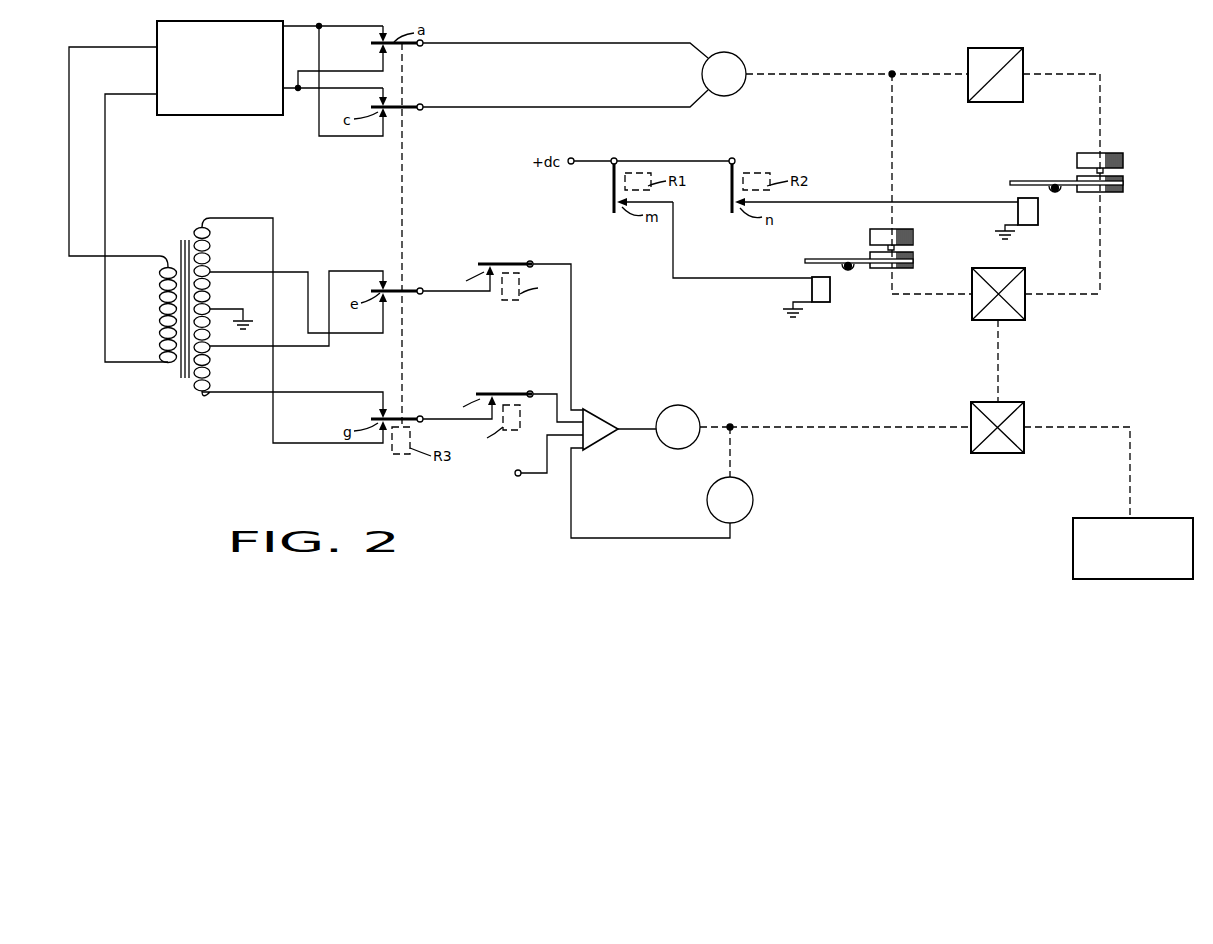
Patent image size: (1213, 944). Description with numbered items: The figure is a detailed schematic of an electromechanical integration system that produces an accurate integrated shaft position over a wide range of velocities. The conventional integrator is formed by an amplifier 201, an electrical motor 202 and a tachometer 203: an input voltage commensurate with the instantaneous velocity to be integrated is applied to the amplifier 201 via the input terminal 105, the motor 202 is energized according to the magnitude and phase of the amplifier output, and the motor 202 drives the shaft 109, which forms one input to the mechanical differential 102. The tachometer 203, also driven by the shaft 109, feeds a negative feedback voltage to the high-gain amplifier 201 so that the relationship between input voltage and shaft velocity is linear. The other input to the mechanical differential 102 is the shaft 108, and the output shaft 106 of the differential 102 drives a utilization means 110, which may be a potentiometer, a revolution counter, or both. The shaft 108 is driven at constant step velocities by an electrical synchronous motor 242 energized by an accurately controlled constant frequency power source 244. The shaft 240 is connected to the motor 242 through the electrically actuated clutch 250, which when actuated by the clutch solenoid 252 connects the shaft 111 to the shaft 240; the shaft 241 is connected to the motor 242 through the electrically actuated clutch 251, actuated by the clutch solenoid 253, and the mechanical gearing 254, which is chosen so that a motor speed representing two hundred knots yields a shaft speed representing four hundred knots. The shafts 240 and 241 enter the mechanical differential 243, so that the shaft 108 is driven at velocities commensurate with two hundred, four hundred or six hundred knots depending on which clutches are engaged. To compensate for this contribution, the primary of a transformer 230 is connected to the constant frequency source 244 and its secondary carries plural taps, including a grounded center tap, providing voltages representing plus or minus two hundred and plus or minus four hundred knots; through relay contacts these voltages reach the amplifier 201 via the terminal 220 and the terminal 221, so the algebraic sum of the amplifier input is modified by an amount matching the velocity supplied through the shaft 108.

The constant frequency electrical power source 244 is at (240, 22).
The electrical synchronous motor 242 is at (743, 67).
The mechanical gearing 254 is at (1003, 54).
The shaft 111 is at (897, 72).
The electrically actuated clutch 251 is at (1075, 170).
The clutch solenoid 253 is at (1018, 217).
The shaft 241 is at (1100, 228).
The electrically actuated clutch 250 is at (868, 246).
The clutch solenoid 252 is at (812, 291).
The shaft 240 is at (943, 290).
The mechanical differential 243 is at (1018, 289).
The transformer 230 is at (165, 375).
The terminal 220 is at (533, 263).
The terminal 221 is at (530, 391).
The input terminal 105 is at (515, 474).
The amplifier 201 is at (592, 423).
The electrical motor 202 is at (690, 416).
The tachometer 203 is at (717, 488).
The shaft 108 is at (996, 364).
The shaft 109 is at (806, 423).
The mechanical differential 102 is at (975, 440).
The output shaft 106 is at (1113, 423).
The utilization means 110 is at (1083, 560).